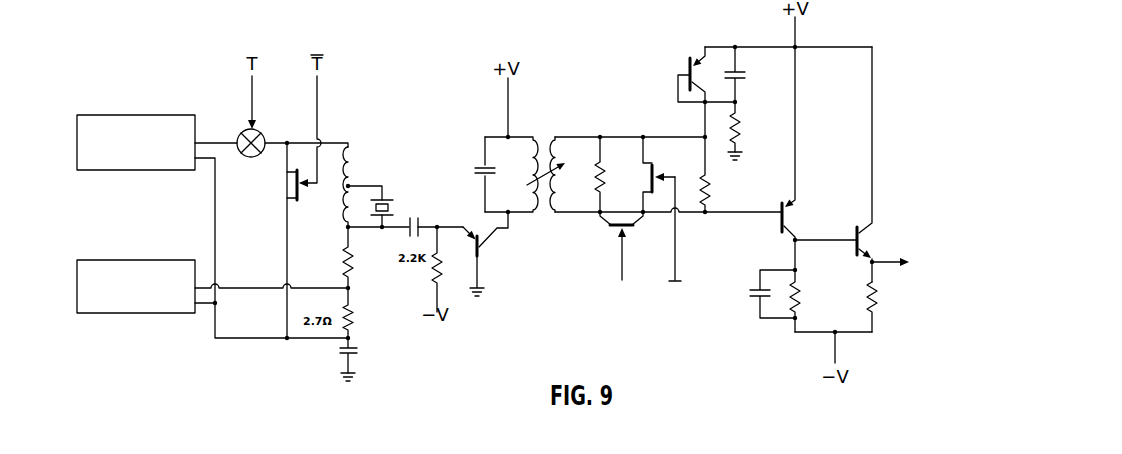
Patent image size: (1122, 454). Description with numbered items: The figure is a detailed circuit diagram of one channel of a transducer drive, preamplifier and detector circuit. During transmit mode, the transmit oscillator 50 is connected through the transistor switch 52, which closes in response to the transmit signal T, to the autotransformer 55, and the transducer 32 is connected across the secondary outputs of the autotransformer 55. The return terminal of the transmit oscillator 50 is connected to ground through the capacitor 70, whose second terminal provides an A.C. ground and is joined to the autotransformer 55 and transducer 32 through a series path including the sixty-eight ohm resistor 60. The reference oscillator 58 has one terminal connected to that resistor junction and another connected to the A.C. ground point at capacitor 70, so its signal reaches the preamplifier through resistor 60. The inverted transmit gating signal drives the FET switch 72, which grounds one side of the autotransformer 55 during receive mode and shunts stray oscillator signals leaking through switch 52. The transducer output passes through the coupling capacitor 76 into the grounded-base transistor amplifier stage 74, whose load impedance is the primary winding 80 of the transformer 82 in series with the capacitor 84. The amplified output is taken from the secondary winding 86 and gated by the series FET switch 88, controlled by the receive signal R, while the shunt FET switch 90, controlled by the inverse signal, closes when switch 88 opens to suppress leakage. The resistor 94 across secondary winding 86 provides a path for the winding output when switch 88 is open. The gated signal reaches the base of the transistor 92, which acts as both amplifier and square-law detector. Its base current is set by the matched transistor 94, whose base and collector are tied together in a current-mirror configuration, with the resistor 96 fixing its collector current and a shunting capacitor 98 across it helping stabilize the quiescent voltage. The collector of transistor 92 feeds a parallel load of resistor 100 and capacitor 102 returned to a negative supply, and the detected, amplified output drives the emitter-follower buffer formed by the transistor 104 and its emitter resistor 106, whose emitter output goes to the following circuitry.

The transmit oscillator 50 is at (125, 114).
The transistor switch 52 is at (262, 133).
The autotransformer 55 is at (347, 166).
The transducer 32 is at (389, 204).
The FET switch 72 is at (283, 189).
The reference oscillator 58 is at (125, 259).
The 68 ohm resistor 60 is at (344, 257).
The capacitor 70 is at (338, 364).
The coupling capacitor 76 is at (421, 223).
The grounded-base transistor amplifier stage 74 is at (481, 247).
The capacitor 84 is at (480, 162).
The primary winding 80 is at (536, 172).
The transformer 82 is at (547, 126).
The secondary winding 86 is at (552, 192).
The FET switch 88 is at (613, 232).
The FET switch 90 is at (658, 171).
The transistor 94 is at (688, 67).
The resistor 96 is at (742, 130).
The bypass capacitor 98 is at (740, 82).
The transistor 92 is at (792, 211).
The resistor 100 is at (803, 292).
The capacitor 102 is at (757, 300).
The transistor 104 is at (872, 244).
The emitter resistor 106 is at (878, 298).